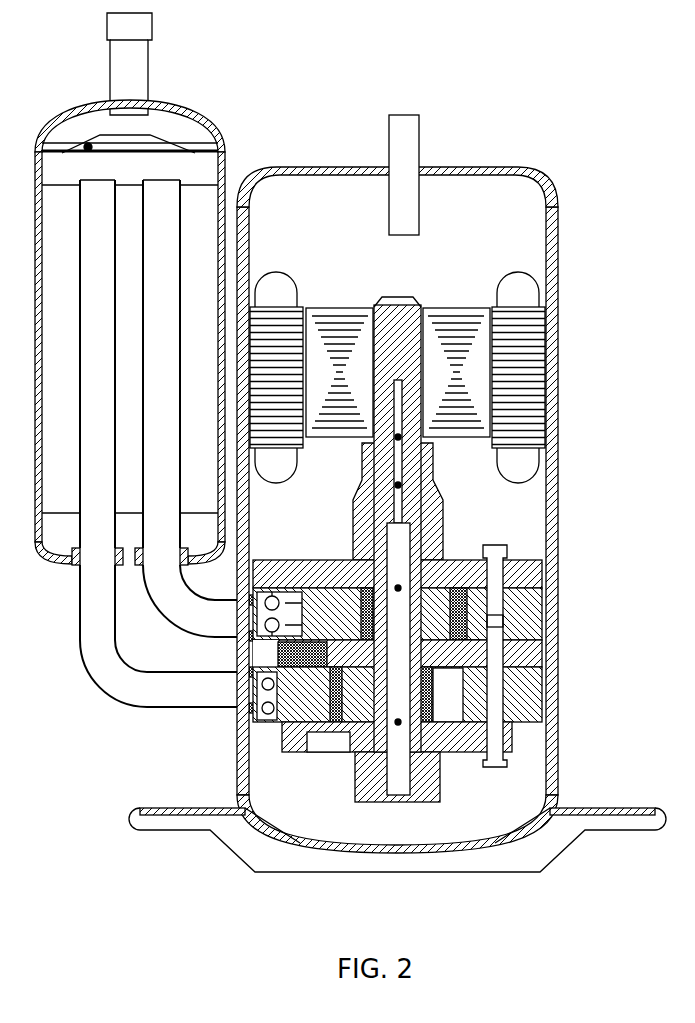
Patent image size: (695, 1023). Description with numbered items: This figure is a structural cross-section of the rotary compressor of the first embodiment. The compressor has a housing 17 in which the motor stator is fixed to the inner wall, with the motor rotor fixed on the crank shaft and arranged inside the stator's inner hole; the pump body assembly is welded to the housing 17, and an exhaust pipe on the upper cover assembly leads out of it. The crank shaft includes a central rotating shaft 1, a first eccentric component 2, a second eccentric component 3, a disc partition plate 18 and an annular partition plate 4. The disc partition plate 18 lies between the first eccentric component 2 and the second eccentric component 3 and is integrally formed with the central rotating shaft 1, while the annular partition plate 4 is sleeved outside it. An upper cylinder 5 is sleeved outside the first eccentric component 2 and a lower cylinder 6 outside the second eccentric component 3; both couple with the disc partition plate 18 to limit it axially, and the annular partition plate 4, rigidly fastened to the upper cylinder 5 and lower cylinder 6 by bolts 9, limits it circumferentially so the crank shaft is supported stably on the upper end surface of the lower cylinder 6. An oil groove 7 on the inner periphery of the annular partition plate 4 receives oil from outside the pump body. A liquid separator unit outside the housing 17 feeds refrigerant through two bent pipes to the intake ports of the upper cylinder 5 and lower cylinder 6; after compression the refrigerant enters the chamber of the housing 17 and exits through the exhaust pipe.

The central rotating shaft 1 is at (410, 468).
The first eccentric component 2 is at (460, 592).
The second eccentric component 3 is at (262, 713).
The annular partition plate 4 is at (520, 653).
The upper cylinder 5 is at (525, 610).
The lower cylinder 6 is at (518, 708).
The oil groove 7 is at (262, 680).
The bolts 9 is at (493, 697).
The housing 17 is at (558, 268).
The disc partition plate 18 is at (455, 648).